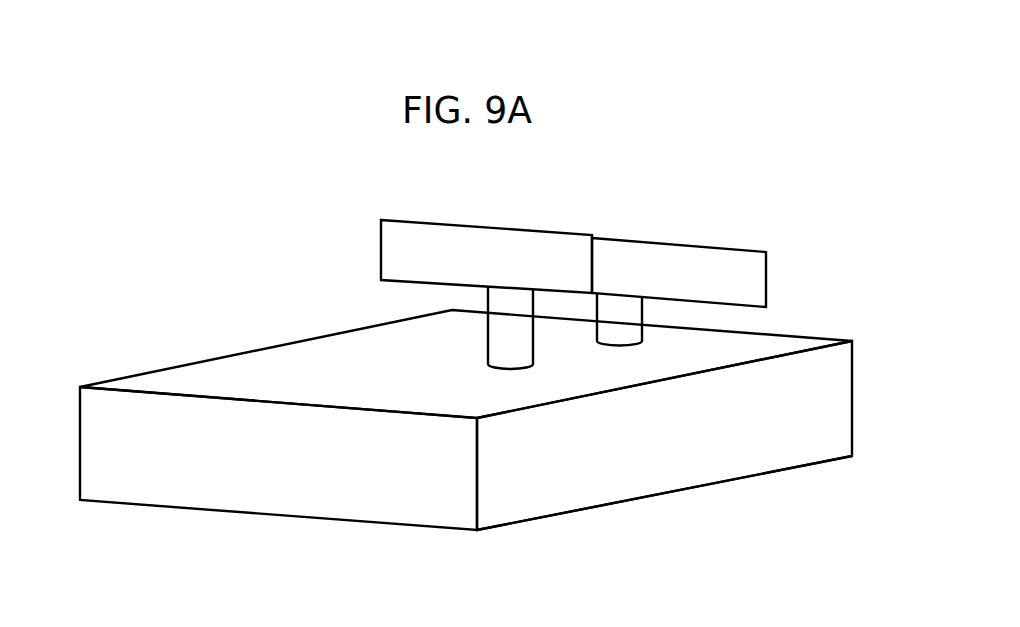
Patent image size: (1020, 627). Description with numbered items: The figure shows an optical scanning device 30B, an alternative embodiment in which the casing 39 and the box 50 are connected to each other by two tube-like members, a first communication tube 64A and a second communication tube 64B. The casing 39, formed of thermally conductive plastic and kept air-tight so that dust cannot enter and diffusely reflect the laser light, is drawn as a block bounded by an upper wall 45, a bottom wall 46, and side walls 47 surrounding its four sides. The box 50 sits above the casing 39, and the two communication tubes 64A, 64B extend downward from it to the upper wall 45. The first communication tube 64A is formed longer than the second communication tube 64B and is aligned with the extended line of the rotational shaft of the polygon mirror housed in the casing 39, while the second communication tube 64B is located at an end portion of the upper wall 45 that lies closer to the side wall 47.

The optical scanning device 30B is at (232, 253).
The upper wall 45 is at (290, 363).
The side wall 47 is at (243, 483).
The casing 39 is at (818, 337).
The bottom wall 46 is at (555, 518).
The box 50 is at (485, 227).
The first communication tube 64A is at (488, 335).
The second communication tube 64B is at (643, 317).